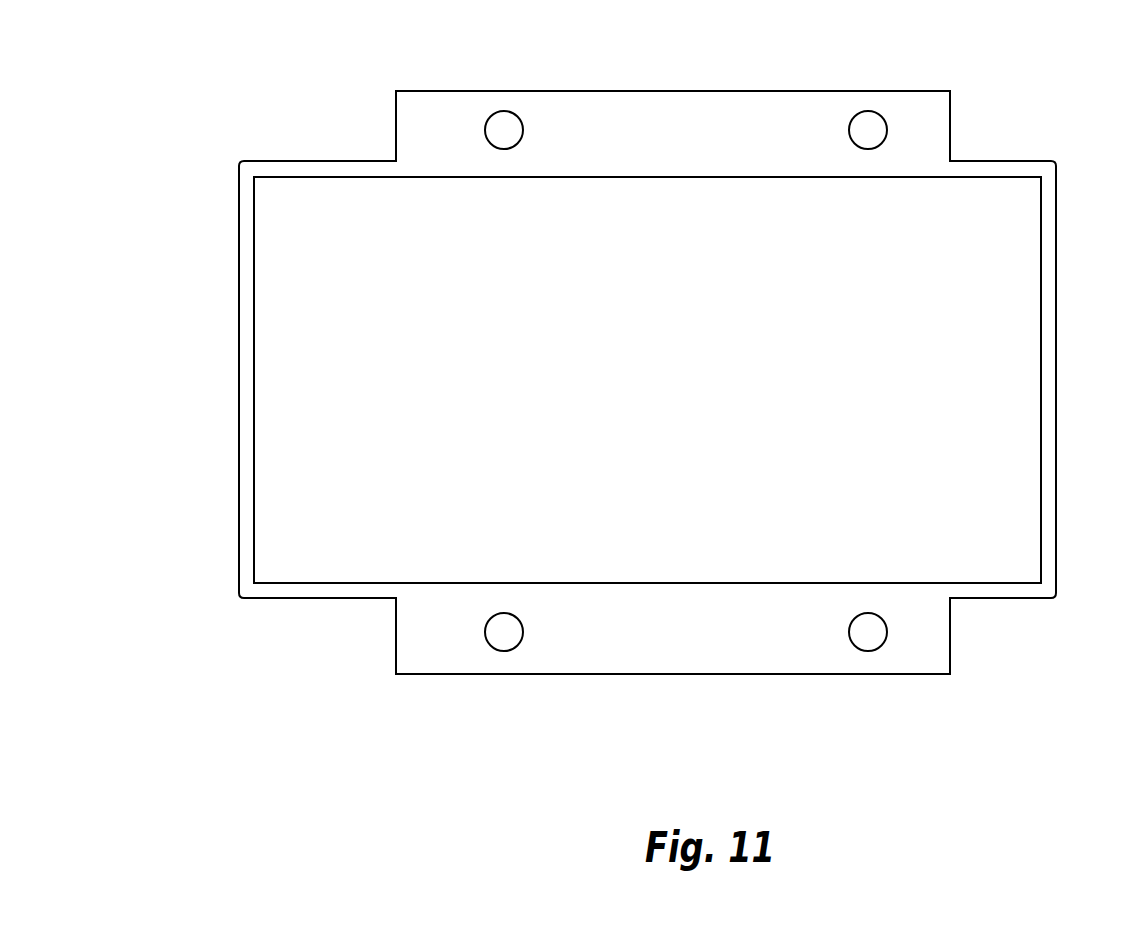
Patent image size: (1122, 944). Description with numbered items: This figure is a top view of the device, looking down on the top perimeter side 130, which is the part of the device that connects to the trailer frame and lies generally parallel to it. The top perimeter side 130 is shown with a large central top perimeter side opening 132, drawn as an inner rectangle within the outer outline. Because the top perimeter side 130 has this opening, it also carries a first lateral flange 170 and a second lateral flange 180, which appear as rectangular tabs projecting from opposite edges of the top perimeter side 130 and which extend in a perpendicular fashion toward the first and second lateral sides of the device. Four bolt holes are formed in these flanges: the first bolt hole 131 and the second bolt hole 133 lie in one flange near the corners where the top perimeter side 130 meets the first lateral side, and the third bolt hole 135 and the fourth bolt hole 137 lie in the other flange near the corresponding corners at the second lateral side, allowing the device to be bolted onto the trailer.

The top perimeter side 130 is at (1028, 156).
The first bolt hole 131 is at (868, 134).
The top perimeter side opening 132 is at (294, 411).
The second bolt hole 133 is at (507, 131).
The third bolt hole 135 is at (868, 631).
The fourth bolt hole 137 is at (507, 633).
The first lateral flange 170 is at (436, 111).
The second lateral flange 180 is at (437, 654).